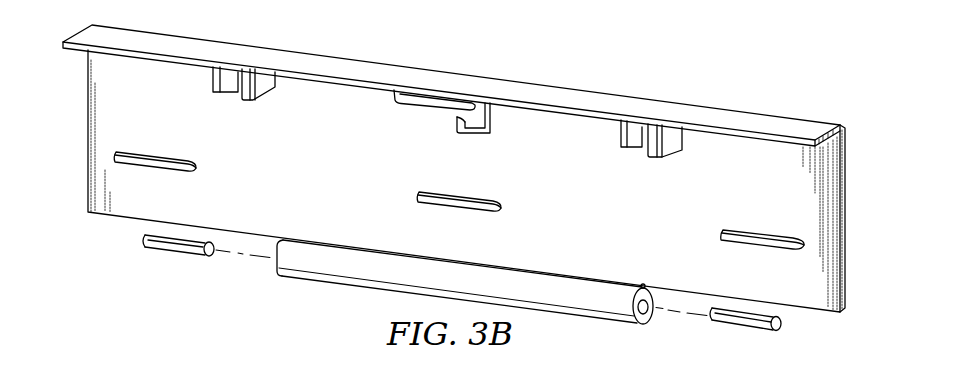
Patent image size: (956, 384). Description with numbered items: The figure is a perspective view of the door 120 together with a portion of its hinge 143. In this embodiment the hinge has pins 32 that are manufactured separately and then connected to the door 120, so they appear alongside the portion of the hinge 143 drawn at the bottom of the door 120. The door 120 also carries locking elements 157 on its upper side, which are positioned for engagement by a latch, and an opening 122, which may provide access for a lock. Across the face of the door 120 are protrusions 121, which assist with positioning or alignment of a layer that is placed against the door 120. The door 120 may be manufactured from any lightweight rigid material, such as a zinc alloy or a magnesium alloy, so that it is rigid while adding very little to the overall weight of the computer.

The door 120 is at (772, 122).
The protrusions 121 is at (161, 151).
The opening 122 is at (475, 128).
The locking elements 157 is at (265, 88).
The pins 32 is at (177, 252).
The hinge 143 is at (323, 283).